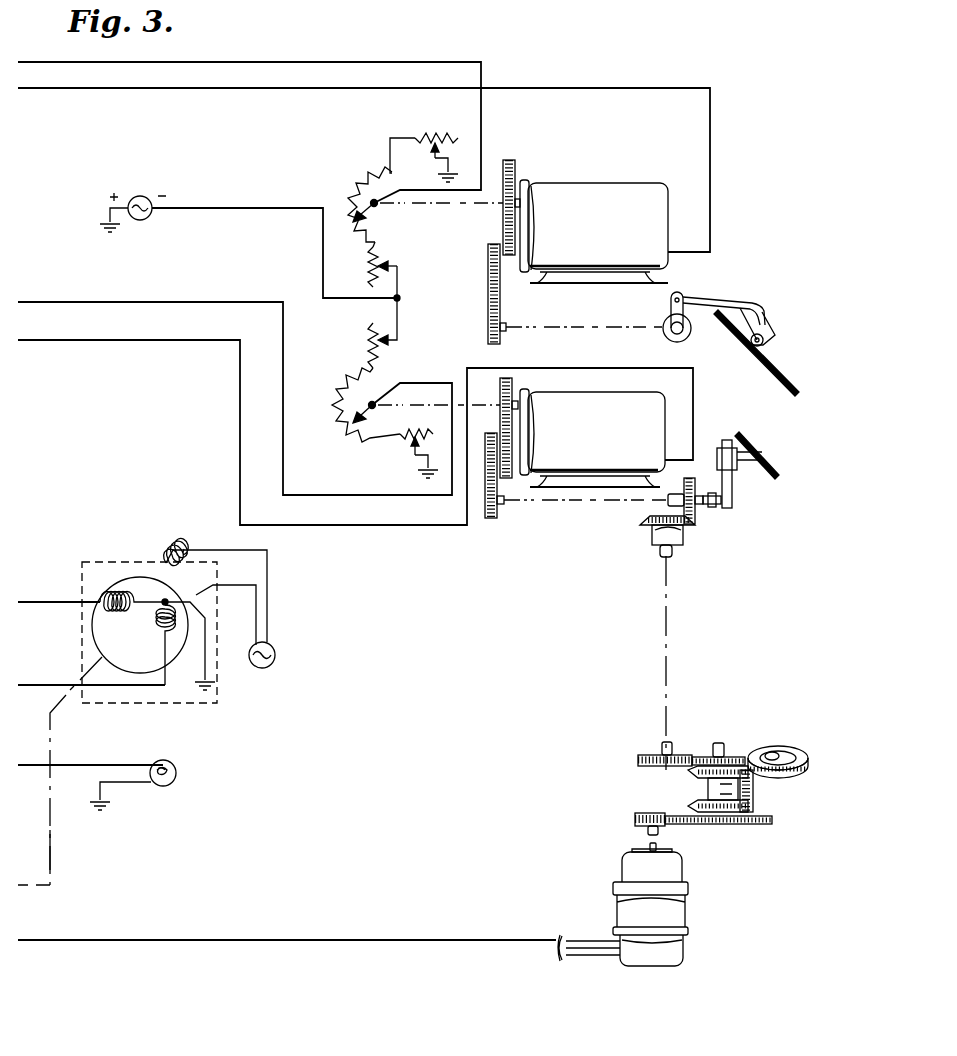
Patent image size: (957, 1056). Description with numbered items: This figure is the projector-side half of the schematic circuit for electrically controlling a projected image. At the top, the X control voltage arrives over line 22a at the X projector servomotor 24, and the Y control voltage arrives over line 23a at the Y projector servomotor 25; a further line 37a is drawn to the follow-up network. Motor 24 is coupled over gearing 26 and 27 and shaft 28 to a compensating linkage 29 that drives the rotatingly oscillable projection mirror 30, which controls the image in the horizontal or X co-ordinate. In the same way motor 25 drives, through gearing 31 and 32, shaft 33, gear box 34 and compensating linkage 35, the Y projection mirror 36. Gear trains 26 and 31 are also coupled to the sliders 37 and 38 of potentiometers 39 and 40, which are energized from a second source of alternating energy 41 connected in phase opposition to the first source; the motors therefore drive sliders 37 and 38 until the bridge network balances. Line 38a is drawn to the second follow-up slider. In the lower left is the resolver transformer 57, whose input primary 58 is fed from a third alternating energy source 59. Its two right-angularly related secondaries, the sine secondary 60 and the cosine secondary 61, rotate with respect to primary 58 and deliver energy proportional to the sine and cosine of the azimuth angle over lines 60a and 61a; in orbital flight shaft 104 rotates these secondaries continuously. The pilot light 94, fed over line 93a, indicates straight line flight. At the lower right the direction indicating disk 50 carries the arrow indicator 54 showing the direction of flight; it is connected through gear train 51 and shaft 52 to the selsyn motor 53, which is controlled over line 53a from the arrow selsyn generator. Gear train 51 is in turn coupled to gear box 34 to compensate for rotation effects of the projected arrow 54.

The conductor line 37a is at (44, 50).
The line 22a is at (40, 90).
The second source of alternating energy 41 is at (148, 196).
The potentiometer 39 is at (348, 178).
The slider 37 is at (380, 206).
The conductor line 38a is at (63, 289).
The line 23a is at (58, 342).
The potentiometer 40 is at (350, 382).
The slider 38 is at (378, 408).
The X projector servomotor 24 is at (598, 183).
The gearing 26 is at (502, 217).
The gearing 27 is at (487, 327).
The shaft 28 is at (572, 320).
The compensating linkage 29 is at (768, 326).
The projection mirror 30 is at (762, 360).
The Y projector servomotor 25 is at (634, 392).
The gearing 31 is at (499, 422).
The gearing 32 is at (488, 520).
The shaft 33 is at (530, 502).
The gear box 34 is at (684, 540).
The compensating linkage 35 is at (745, 492).
The Y projection mirror 36 is at (745, 428).
The resolver transformer 57 is at (218, 697).
The line 60a is at (45, 598).
The sine secondary 60 is at (125, 598).
The cosine secondary 61 is at (173, 648).
The line 61a is at (42, 684).
The input primary 58 is at (186, 580).
The third alternating energy source 59 is at (270, 663).
The line 93a is at (26, 763).
The pilot light 94 is at (176, 781).
The shaft 104 is at (50, 851).
The line 53a is at (74, 938).
The gear train 51 is at (660, 789).
The arrow indicator 54 is at (782, 758).
The direction indicating disk 50 is at (787, 774).
The shaft 52 is at (648, 846).
The selsyn motor 53 is at (676, 912).